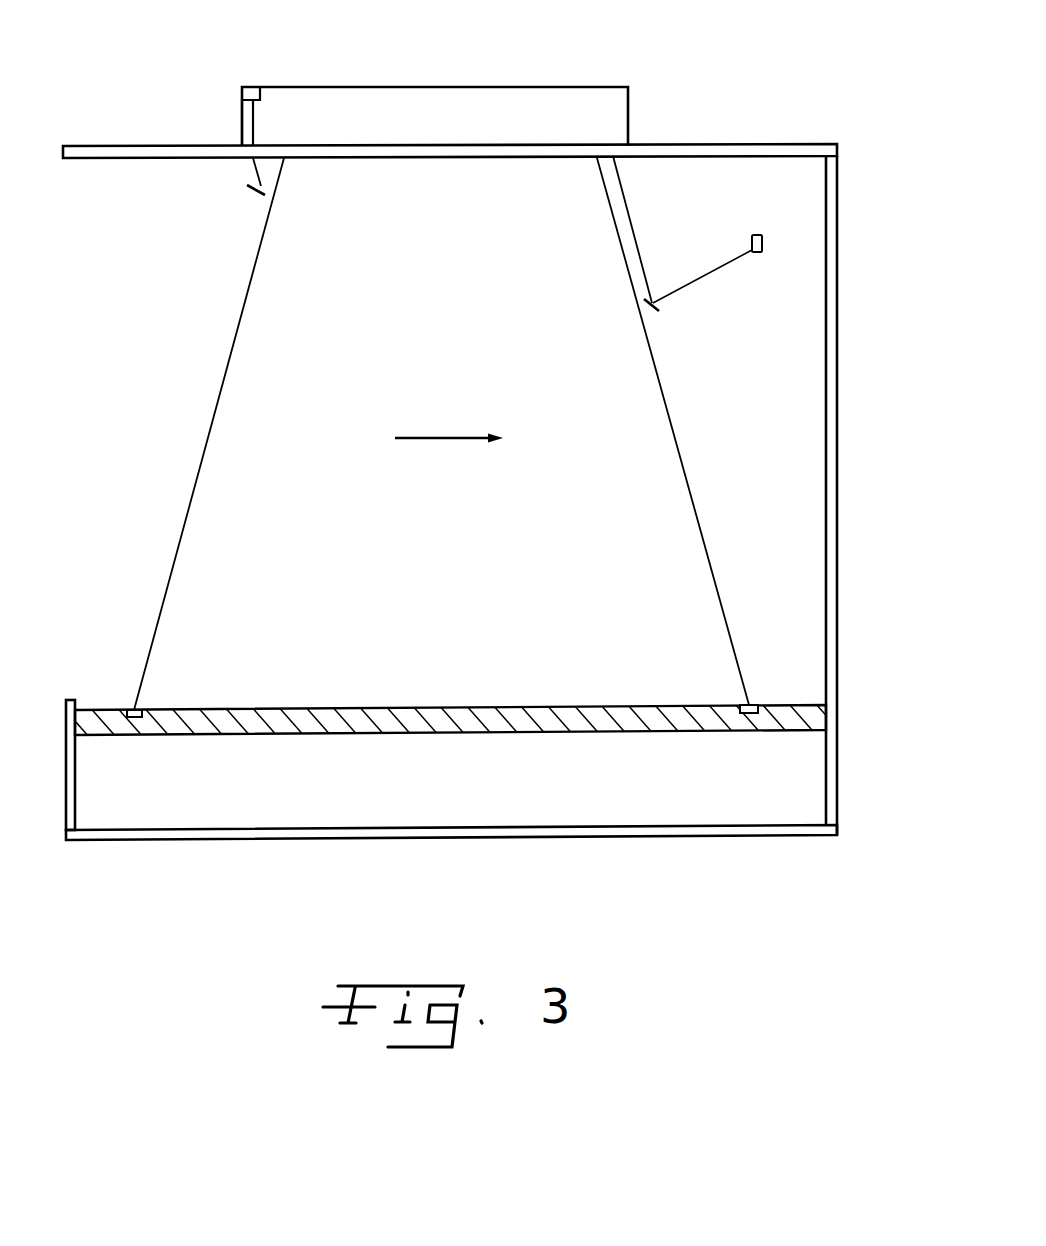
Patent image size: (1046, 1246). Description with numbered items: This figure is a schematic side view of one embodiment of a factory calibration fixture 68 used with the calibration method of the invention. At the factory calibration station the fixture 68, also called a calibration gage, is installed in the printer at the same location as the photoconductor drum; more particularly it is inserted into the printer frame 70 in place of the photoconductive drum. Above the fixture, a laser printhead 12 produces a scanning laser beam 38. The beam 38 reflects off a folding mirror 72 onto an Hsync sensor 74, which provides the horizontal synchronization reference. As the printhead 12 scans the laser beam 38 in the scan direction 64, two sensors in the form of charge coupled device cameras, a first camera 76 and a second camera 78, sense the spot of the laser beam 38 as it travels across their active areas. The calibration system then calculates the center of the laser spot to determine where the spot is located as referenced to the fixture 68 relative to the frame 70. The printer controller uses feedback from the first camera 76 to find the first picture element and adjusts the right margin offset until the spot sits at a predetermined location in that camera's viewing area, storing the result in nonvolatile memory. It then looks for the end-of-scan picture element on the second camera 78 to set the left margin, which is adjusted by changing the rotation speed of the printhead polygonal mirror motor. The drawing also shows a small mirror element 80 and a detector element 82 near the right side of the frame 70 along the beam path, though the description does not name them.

The laser printhead 12 is at (459, 100).
The scanning laser beam 38 is at (618, 294).
The scan direction 64 is at (443, 437).
The factory calibration fixture 68 is at (453, 696).
The printer frame 70 is at (842, 326).
The folding mirror 72 is at (243, 206).
The Hsync sensor 74 is at (230, 88).
The first camera 76 is at (138, 710).
The second camera 78 is at (748, 705).
The second mirror 80 is at (678, 317).
The detector 82 is at (779, 234).